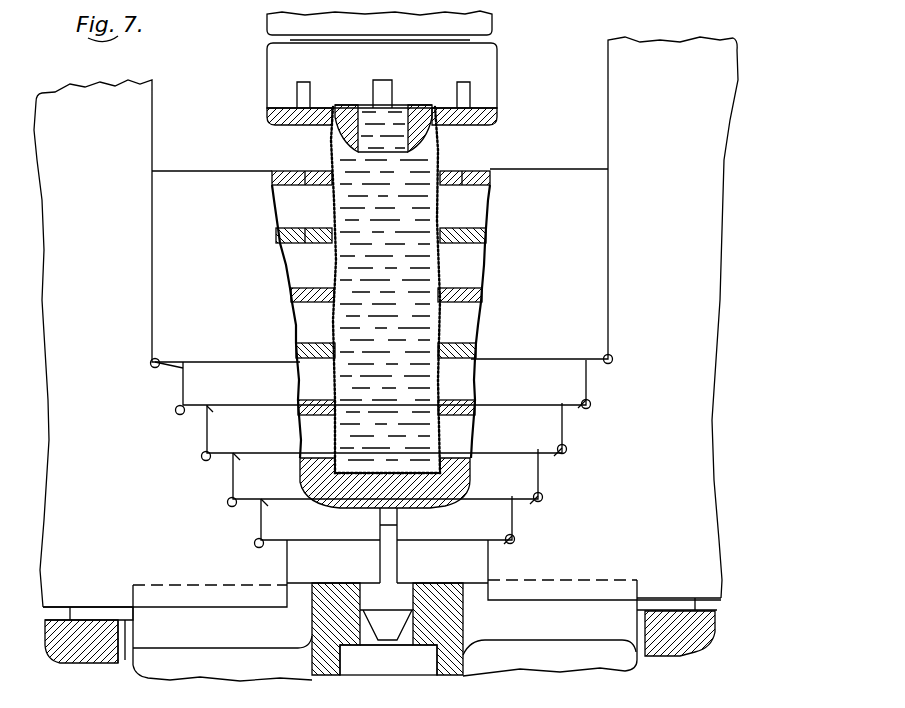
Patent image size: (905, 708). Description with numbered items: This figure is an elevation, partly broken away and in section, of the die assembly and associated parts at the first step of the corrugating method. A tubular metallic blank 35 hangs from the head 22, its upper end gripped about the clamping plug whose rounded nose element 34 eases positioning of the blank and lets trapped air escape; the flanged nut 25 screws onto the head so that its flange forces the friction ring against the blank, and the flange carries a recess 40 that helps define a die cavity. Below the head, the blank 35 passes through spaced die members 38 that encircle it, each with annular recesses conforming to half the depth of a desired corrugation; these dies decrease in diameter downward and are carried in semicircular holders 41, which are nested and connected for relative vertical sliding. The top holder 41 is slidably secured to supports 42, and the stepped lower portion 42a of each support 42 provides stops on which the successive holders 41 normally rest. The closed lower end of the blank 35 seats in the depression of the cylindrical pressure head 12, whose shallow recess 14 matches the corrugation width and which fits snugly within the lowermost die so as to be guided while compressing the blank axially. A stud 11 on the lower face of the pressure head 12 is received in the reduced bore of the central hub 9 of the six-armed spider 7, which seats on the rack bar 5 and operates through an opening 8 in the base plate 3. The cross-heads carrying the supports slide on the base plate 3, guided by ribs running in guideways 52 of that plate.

The base plate 3 is at (90, 648).
The rack bar 5 is at (367, 667).
The six-armed spider 7 is at (192, 668).
The opening 8 is at (127, 657).
The central hub 9 is at (325, 625).
The stud 11 is at (387, 592).
The cylindrical pressure head 12 is at (300, 476).
The shallow recess 14 is at (330, 457).
The head 22 is at (272, 24).
The flanged nut 25 is at (478, 61).
The nose element 34 is at (437, 140).
The tubular metallic blank 35 is at (331, 213).
The die members 38 is at (480, 169).
The recess 40 is at (323, 124).
The holders 41 is at (219, 185).
The supports 42 is at (138, 112).
The lower portion of support 42a is at (397, 454).
The guideways 52 is at (55, 614).